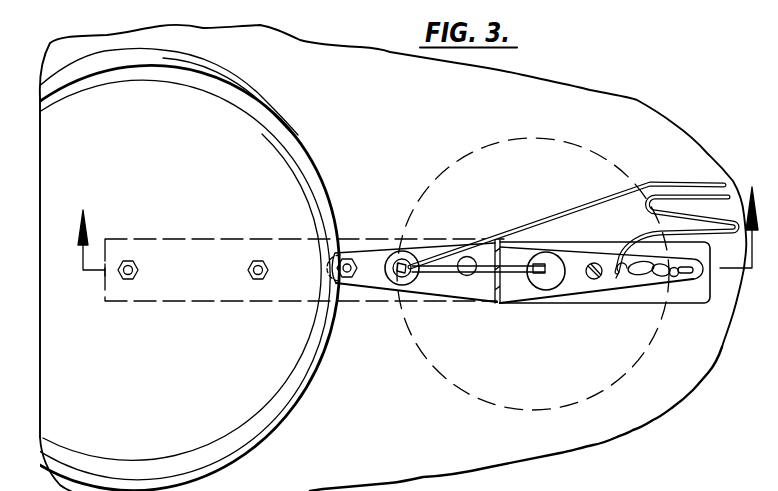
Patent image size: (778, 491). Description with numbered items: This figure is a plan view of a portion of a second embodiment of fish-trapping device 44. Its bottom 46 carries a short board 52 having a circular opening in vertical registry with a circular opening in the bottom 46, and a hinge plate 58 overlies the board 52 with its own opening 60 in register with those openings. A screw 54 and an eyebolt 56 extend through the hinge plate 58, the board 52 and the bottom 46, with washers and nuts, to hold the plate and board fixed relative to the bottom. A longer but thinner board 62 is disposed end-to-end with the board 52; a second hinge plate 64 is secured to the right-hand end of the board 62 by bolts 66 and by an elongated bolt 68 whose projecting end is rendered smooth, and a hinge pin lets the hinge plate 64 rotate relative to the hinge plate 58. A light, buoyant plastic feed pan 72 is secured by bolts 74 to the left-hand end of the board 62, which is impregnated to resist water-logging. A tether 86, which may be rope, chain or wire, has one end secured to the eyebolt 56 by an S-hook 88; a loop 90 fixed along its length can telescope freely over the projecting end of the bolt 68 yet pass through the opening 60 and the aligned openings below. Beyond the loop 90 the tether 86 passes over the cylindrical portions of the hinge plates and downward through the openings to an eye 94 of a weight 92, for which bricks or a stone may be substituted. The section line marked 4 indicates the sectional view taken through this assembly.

The section line 4- 4 is at (416, 218).
The fish-trapping device 44 is at (654, 97).
The bottom 46 is at (614, 428).
The short board 52 is at (643, 305).
The screw 54 is at (595, 262).
The eyebolt 56 is at (690, 275).
The hinge plate 58 is at (592, 290).
The opening 60 is at (552, 279).
The longer board 62 is at (343, 247).
The hinge plate 64 is at (372, 260).
The bolts 66 is at (350, 278).
The elongated bolt 68 is at (390, 284).
The feed pan 72 is at (262, 424).
The bolts 74 is at (247, 268).
The tether 86 is at (679, 225).
The S-hook 88 is at (660, 278).
The loop 90 is at (413, 279).
The weight 92 is at (485, 398).
The eye 94 is at (545, 265).